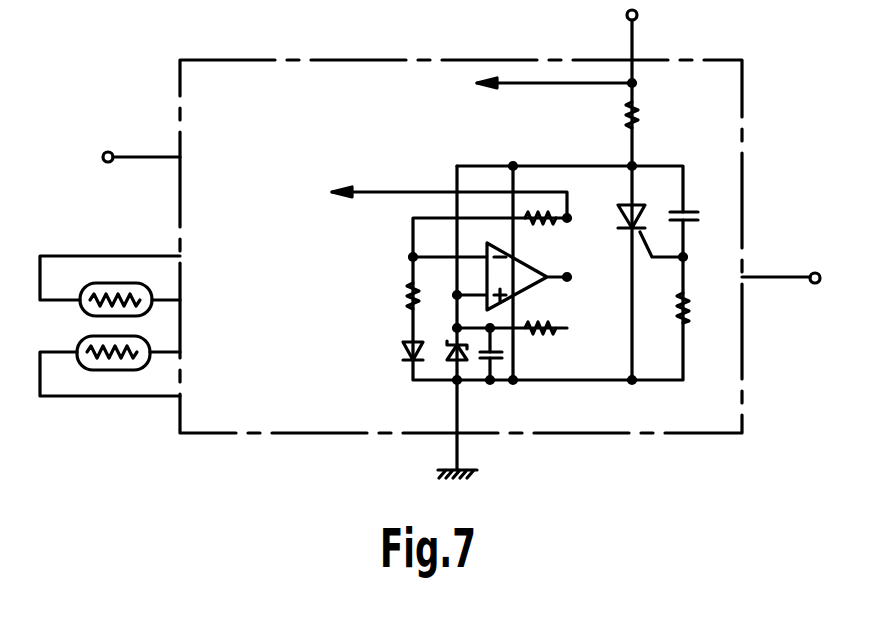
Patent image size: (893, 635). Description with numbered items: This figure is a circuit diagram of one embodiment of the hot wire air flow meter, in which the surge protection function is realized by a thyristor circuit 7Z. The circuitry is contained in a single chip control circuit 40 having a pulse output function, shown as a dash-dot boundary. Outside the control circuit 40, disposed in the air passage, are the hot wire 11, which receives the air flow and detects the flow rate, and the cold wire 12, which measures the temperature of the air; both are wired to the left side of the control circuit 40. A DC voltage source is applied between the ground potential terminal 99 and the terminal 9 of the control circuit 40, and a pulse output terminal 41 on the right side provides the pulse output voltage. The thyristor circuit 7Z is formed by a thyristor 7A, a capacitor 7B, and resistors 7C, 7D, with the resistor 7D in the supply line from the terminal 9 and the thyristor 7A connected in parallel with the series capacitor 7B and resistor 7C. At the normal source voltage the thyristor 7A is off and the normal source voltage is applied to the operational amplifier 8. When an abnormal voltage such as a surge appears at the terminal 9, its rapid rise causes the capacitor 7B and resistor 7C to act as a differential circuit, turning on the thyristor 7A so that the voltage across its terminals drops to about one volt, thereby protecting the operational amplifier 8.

The terminal 9 is at (640, 14).
The hot wire 11 is at (80, 295).
The cold wire 12 is at (78, 340).
The control circuit 40 is at (262, 433).
The thyristor circuit 7Z is at (572, 284).
The thyristor 7A is at (625, 215).
The capacitor 7B is at (693, 205).
The resistor 7C is at (690, 315).
The resistor 7D is at (637, 117).
The operational amplifier 8 is at (549, 280).
The ground potential terminal 99 is at (477, 470).
The pulse output terminal 41 is at (810, 285).